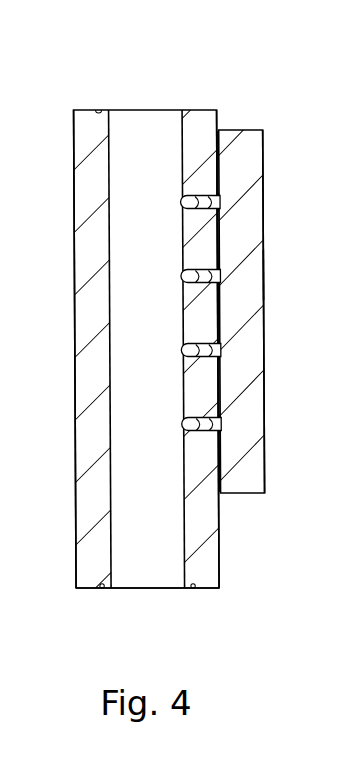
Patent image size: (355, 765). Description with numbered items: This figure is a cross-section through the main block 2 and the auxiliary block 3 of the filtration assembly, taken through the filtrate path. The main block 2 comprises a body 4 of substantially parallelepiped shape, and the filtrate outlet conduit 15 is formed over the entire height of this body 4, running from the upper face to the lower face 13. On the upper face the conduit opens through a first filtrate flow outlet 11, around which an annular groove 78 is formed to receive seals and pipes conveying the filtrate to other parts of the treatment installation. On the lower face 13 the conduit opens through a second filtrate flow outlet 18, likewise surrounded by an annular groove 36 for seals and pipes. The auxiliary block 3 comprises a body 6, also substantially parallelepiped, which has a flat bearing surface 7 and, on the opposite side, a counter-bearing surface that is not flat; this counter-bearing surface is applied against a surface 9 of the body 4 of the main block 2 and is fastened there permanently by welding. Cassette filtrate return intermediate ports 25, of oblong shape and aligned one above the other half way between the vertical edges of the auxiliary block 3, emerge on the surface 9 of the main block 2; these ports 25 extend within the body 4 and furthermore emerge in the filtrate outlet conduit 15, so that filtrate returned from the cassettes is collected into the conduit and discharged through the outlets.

The main block 2 is at (86, 110).
The annular groove 78 is at (98, 108).
The first filtrate flow outlet 11 is at (134, 109).
The filtrate outlet conduit 15 is at (158, 110).
The surface 9 is at (221, 115).
The body 4 is at (78, 150).
The body 6 is at (252, 157).
The auxiliary block 3 is at (263, 212).
The cassette filtrate return intermediate ports 25 is at (230, 203).
The flat bearing surface 7 is at (270, 275).
The lower face 13 is at (91, 595).
The second filtrate flow outlet 18 is at (155, 590).
The annular groove 36 is at (193, 590).